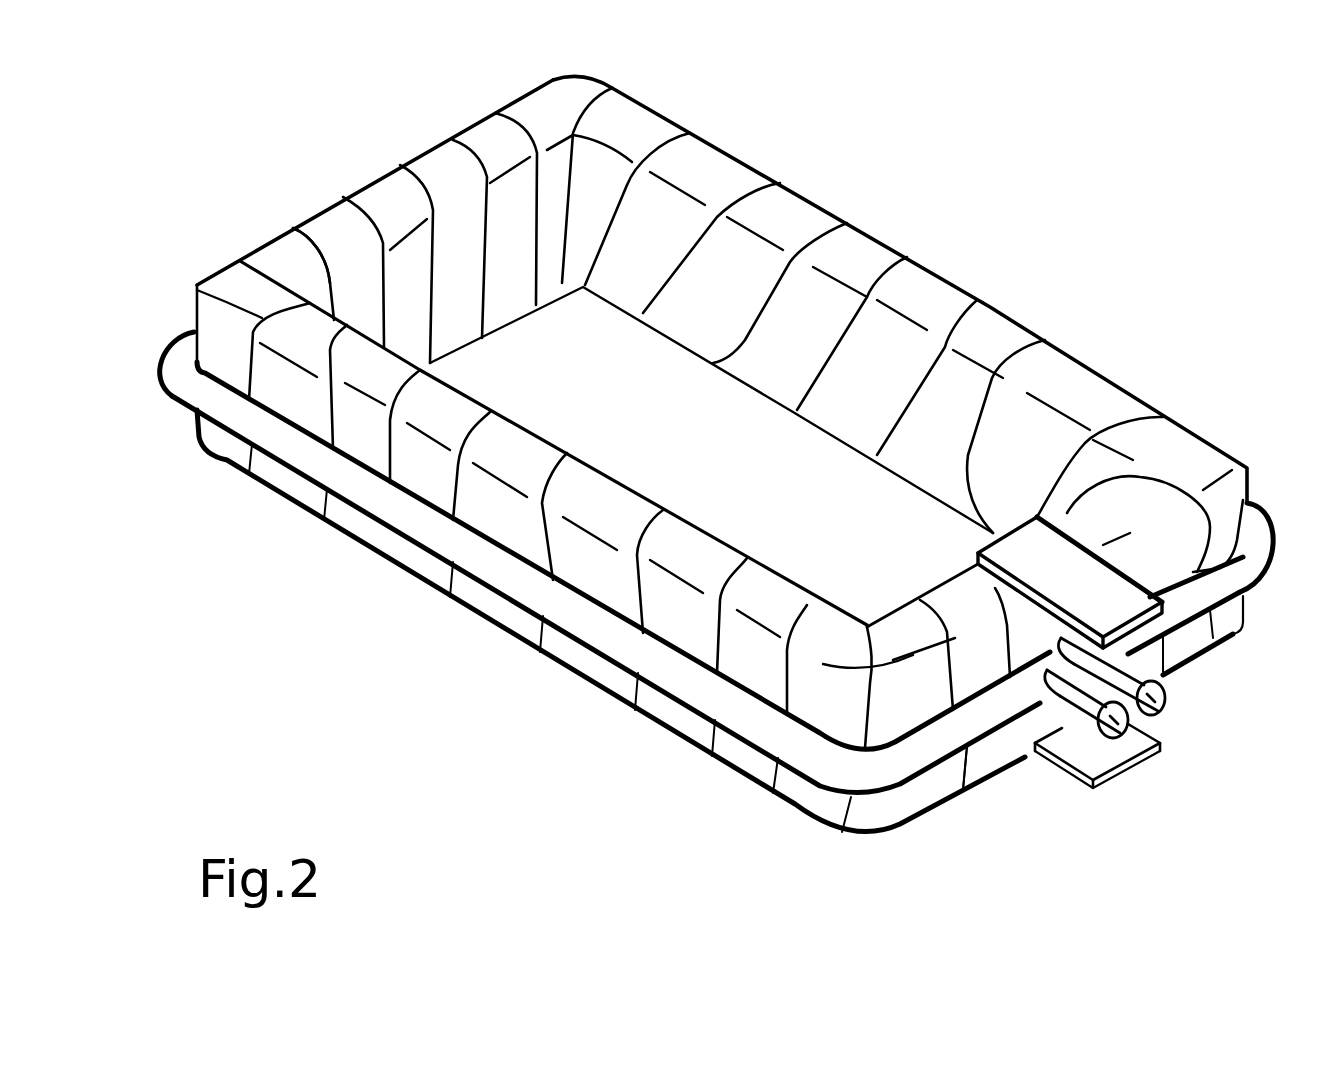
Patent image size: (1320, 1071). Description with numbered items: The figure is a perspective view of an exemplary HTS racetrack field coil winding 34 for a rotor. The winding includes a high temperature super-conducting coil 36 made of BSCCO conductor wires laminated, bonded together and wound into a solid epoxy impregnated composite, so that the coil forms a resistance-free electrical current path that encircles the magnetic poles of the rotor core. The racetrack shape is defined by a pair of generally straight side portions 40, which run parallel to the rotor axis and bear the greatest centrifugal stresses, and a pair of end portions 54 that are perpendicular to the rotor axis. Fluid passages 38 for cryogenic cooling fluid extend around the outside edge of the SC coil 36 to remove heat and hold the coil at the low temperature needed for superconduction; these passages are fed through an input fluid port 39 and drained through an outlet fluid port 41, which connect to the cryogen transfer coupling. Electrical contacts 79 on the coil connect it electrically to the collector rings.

The HTS racetrack field coil winding 34 is at (370, 101).
The high temperature super-conducting coil 36 is at (987, 349).
The fluid passages 38 is at (518, 586).
The input fluid port 39 is at (1168, 702).
The side portions 40 is at (364, 551).
The outlet fluid port 41 is at (1162, 745).
The end portions 54 is at (295, 251).
The electrical contacts 79 is at (1115, 592).